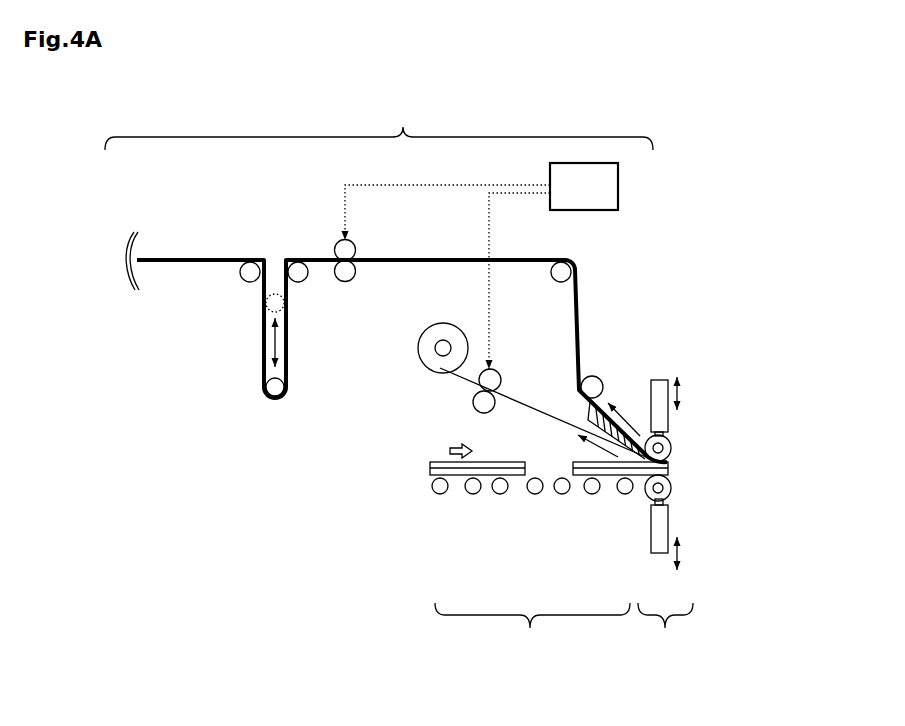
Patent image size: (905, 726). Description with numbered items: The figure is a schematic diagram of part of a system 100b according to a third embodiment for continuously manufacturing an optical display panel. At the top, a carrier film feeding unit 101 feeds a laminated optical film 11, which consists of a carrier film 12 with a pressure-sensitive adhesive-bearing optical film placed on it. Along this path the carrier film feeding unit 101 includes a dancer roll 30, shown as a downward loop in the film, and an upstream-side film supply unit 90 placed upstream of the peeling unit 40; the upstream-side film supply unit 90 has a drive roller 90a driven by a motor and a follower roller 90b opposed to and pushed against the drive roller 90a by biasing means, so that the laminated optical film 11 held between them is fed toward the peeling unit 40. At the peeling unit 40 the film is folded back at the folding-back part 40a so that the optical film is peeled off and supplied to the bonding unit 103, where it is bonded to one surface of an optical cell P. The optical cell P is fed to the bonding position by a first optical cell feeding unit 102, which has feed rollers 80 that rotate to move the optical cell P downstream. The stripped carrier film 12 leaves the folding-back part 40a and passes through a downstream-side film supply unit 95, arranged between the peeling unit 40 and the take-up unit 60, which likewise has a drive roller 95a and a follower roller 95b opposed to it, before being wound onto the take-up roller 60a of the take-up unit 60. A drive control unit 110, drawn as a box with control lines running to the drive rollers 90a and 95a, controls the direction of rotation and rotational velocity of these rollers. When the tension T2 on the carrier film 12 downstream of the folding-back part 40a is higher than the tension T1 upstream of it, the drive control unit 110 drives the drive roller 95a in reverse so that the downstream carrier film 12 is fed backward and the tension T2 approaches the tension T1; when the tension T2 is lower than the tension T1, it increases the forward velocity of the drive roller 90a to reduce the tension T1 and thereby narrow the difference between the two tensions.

The carrier film feeding unit 101 is at (379, 121).
The drive control unit 110 is at (481, 266).
The system 100b is at (669, 216).
The laminated optical film 11 is at (430, 262).
The upstream-side film supply unit 90 is at (345, 265).
The drive roller 90a is at (336, 244).
The follower roller 90b is at (345, 282).
The dancer roll 30 is at (262, 340).
The take-up unit 60 is at (419, 351).
The take-up roller 60a is at (436, 356).
The carrier film 12 is at (530, 413).
The downstream-side film supply unit 95 is at (484, 372).
The drive roller 95a is at (496, 369).
The follower roller 95b is at (475, 406).
The peeling unit 40 is at (586, 418).
The tension T1 is at (614, 408).
The tension T2 is at (580, 437).
The optical cell P is at (430, 463).
The feed rollers 80 is at (440, 494).
The folding-back part 40a is at (644, 462).
The first optical cell feeding unit 102 is at (532, 632).
The bonding unit 103 is at (665, 632).